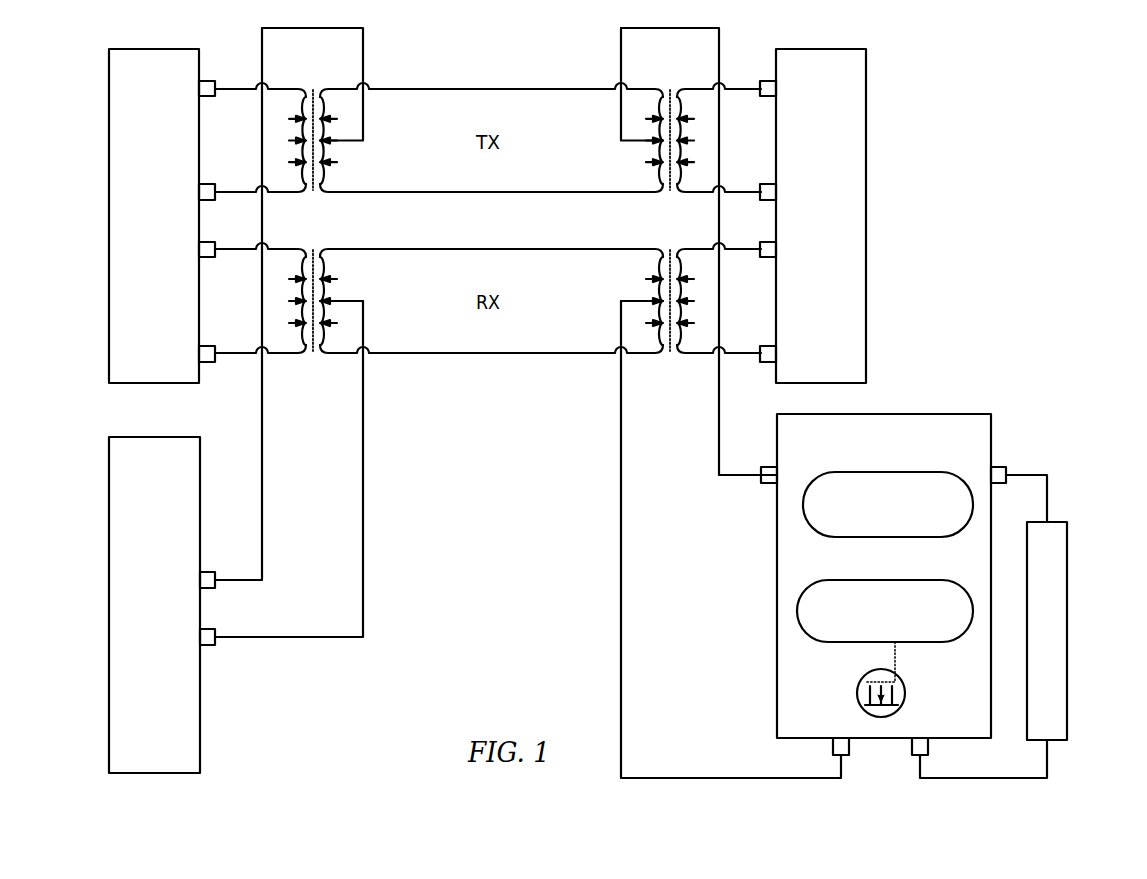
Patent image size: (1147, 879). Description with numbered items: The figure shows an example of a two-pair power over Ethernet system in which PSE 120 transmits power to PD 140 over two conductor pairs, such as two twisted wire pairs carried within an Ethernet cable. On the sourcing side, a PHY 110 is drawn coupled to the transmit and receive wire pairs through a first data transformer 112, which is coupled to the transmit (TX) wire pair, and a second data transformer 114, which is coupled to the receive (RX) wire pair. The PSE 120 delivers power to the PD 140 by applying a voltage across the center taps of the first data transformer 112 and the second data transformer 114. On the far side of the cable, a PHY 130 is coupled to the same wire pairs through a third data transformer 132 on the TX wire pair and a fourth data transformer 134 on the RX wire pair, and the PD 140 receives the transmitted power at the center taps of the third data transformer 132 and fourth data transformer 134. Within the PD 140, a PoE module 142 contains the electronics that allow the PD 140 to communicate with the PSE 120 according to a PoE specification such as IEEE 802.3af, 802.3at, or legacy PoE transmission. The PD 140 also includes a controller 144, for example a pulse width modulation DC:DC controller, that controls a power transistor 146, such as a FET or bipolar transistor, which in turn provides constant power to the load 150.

The PHY (power sourcing side physical layer device) 110 is at (109, 218).
The first data transformer 112 is at (307, 196).
The second data transformer 114 is at (307, 357).
The PSE 120 is at (109, 606).
The PHY (powered device side physical layer device) 130 is at (866, 215).
The third data transformer 132 is at (665, 198).
The fourth data transformer 134 is at (663, 360).
The PD 140 is at (857, 584).
The PoE module 142 is at (866, 472).
The controller 144 is at (830, 580).
The power transistor 146 is at (858, 693).
The load 150 is at (1067, 580).